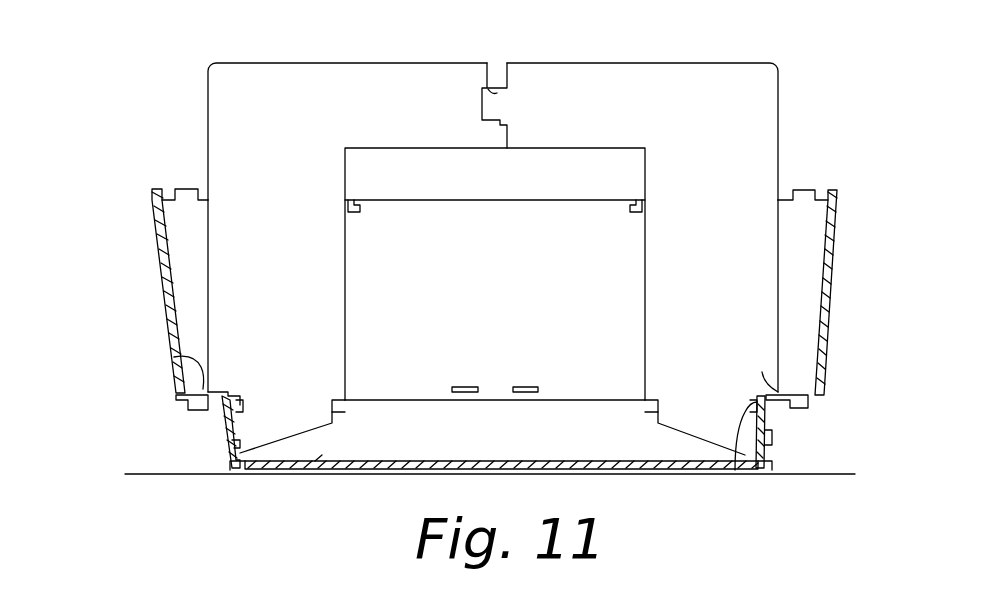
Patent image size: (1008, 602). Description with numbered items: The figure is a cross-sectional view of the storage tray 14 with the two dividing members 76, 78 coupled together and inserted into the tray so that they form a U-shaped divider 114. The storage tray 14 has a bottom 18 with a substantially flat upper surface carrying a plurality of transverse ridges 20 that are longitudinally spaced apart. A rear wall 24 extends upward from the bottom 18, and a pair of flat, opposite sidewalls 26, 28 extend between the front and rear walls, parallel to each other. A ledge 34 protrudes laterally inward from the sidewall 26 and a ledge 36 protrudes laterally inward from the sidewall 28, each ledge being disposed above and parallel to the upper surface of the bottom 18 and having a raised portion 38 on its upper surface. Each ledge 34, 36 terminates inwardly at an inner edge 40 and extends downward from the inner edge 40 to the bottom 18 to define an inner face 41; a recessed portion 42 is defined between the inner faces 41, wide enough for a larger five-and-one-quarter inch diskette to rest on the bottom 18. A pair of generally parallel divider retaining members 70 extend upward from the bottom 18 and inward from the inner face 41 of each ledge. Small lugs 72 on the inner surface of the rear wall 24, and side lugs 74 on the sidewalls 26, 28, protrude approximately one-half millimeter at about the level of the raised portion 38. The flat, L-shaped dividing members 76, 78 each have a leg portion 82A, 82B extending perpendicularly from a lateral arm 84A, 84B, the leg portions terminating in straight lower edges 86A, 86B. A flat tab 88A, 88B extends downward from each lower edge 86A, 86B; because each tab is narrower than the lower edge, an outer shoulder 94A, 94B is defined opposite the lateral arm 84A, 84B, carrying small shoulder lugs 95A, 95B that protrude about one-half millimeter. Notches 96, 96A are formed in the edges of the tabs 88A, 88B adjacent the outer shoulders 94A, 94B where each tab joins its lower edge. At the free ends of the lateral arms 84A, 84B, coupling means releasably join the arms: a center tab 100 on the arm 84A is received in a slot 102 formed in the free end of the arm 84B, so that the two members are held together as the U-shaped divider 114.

The storage tray 14 is at (142, 187).
The bottom 18 is at (320, 465).
The transverse ridges 20 is at (410, 460).
The rear wall 24 is at (527, 218).
The sidewall 26 is at (160, 258).
The sidewall 28 is at (823, 272).
The ledge 34 is at (195, 410).
The ledge 36 is at (798, 411).
The raised portion 38 is at (176, 357).
The inner edge 40 is at (228, 392).
The inner face 41 is at (738, 462).
The recessed portion 42 is at (555, 412).
The divider retaining members 70 is at (236, 463).
The lugs 72 is at (468, 388).
The side lugs 74 is at (810, 380).
The dividing member 76 is at (666, 78).
The dividing member 78 is at (285, 77).
The leg portion 82A is at (758, 182).
The leg portion 82B is at (228, 140).
The lateral arm 84A is at (550, 78).
The lateral arm 84B is at (349, 78).
The lower edge 86A is at (648, 403).
The lower edge 86B is at (356, 402).
The tab 88A is at (716, 428).
The tab 88B is at (240, 470).
The outer shoulder 94A is at (776, 430).
The outer shoulder 94B is at (224, 431).
The shoulder lugs 95A is at (758, 396).
The shoulder lugs 95B is at (236, 400).
The notch 96 is at (243, 408).
The notch 96A is at (753, 408).
The center tab 100 is at (497, 99).
The slot 102 is at (490, 72).
The U-shaped divider 114 is at (746, 60).